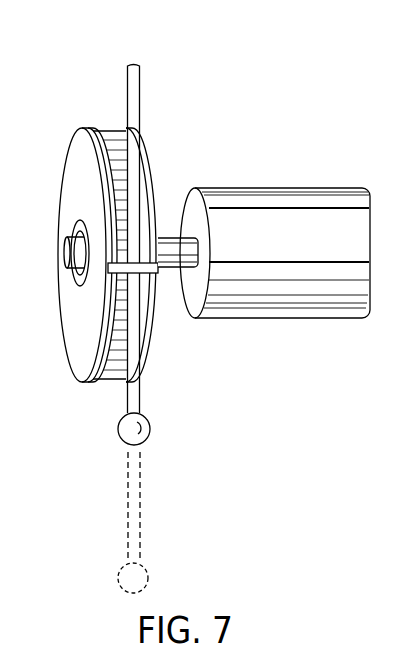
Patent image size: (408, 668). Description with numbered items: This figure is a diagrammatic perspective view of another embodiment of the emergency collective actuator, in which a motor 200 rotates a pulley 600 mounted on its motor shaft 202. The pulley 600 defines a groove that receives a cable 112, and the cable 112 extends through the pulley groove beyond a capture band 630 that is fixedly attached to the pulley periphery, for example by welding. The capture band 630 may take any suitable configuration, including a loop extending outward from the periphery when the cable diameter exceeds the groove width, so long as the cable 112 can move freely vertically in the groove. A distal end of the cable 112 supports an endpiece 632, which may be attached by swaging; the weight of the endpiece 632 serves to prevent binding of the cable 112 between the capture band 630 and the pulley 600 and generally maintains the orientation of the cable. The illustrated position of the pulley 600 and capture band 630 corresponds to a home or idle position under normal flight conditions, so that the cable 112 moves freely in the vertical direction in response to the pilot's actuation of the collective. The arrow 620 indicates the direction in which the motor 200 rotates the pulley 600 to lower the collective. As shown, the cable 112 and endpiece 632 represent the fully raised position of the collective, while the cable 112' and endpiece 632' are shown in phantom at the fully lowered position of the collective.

The direction 620 is at (104, 104).
The pulley 600 is at (64, 149).
The cable 112 is at (173, 238).
The capture band 630 is at (112, 267).
The endpiece 632 is at (182, 422).
The motor shaft 202 is at (172, 245).
The motor 200 is at (322, 188).
The cable 112' is at (187, 507).
The endpiece 632' is at (185, 575).